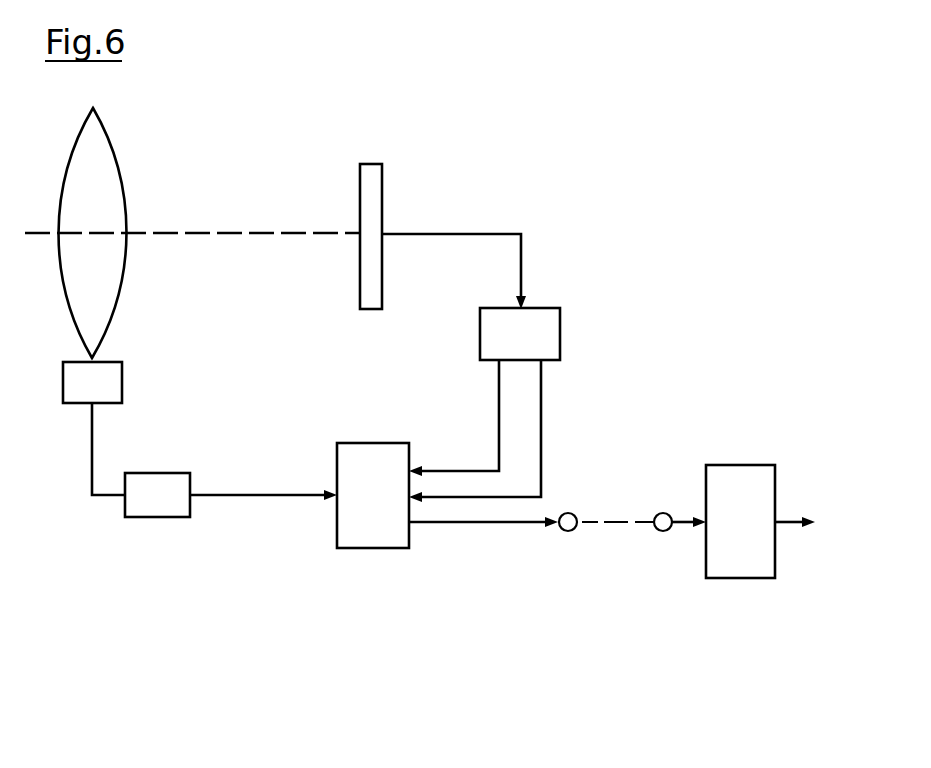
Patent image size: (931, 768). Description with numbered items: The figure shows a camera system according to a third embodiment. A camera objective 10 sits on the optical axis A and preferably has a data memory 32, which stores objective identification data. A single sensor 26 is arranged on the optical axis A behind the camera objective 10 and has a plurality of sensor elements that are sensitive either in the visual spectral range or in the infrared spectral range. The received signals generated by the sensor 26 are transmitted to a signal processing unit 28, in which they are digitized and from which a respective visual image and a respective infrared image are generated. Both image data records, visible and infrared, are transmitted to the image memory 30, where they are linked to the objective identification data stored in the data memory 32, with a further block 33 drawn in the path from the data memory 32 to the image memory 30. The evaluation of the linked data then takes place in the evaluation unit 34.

The camera objective 10 is at (112, 193).
The optical axis A is at (220, 233).
The sensor 26 is at (372, 199).
The signal processing unit 28 is at (545, 338).
The image memory 30 is at (343, 530).
The data memory 32 is at (108, 380).
The signal processing unit 33 is at (159, 510).
The evaluation unit 34 is at (730, 558).